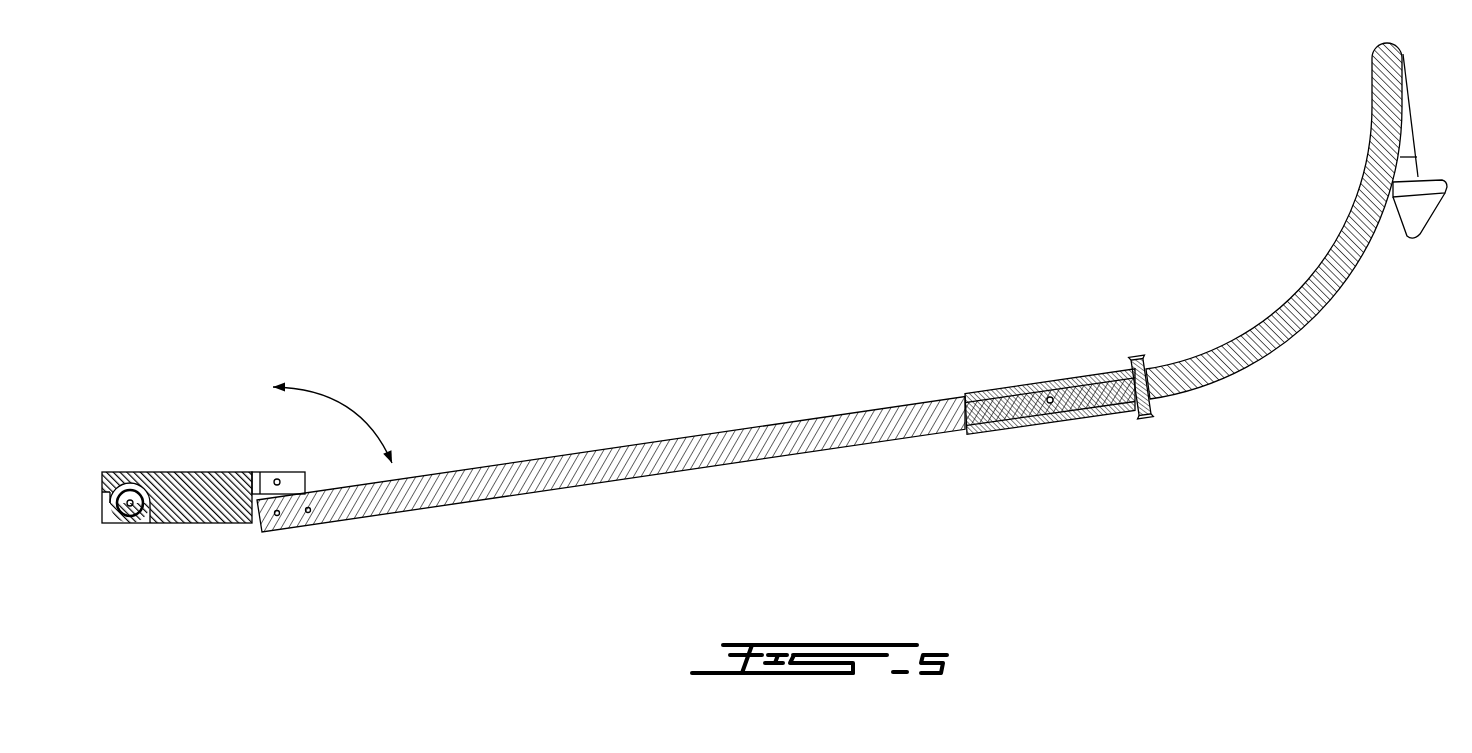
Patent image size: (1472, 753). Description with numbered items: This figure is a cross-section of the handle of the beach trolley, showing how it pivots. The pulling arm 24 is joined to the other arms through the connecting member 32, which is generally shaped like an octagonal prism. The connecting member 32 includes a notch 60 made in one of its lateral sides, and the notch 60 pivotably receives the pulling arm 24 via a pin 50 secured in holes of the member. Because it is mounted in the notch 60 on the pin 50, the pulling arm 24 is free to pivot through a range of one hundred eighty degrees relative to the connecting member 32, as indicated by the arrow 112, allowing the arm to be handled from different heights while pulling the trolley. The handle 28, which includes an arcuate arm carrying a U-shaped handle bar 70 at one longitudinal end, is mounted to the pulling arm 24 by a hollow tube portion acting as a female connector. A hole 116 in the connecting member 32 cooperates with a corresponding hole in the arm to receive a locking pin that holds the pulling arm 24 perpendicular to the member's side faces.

The pulling arm 24 is at (705, 393).
The handle 28 is at (1274, 221).
The connecting member 32 is at (177, 406).
The pin 50 is at (273, 517).
The notch 60 is at (277, 403).
The U-shaped handle bar 70 is at (1418, 140).
The arrow 112 is at (347, 402).
The hole 116 is at (310, 514).